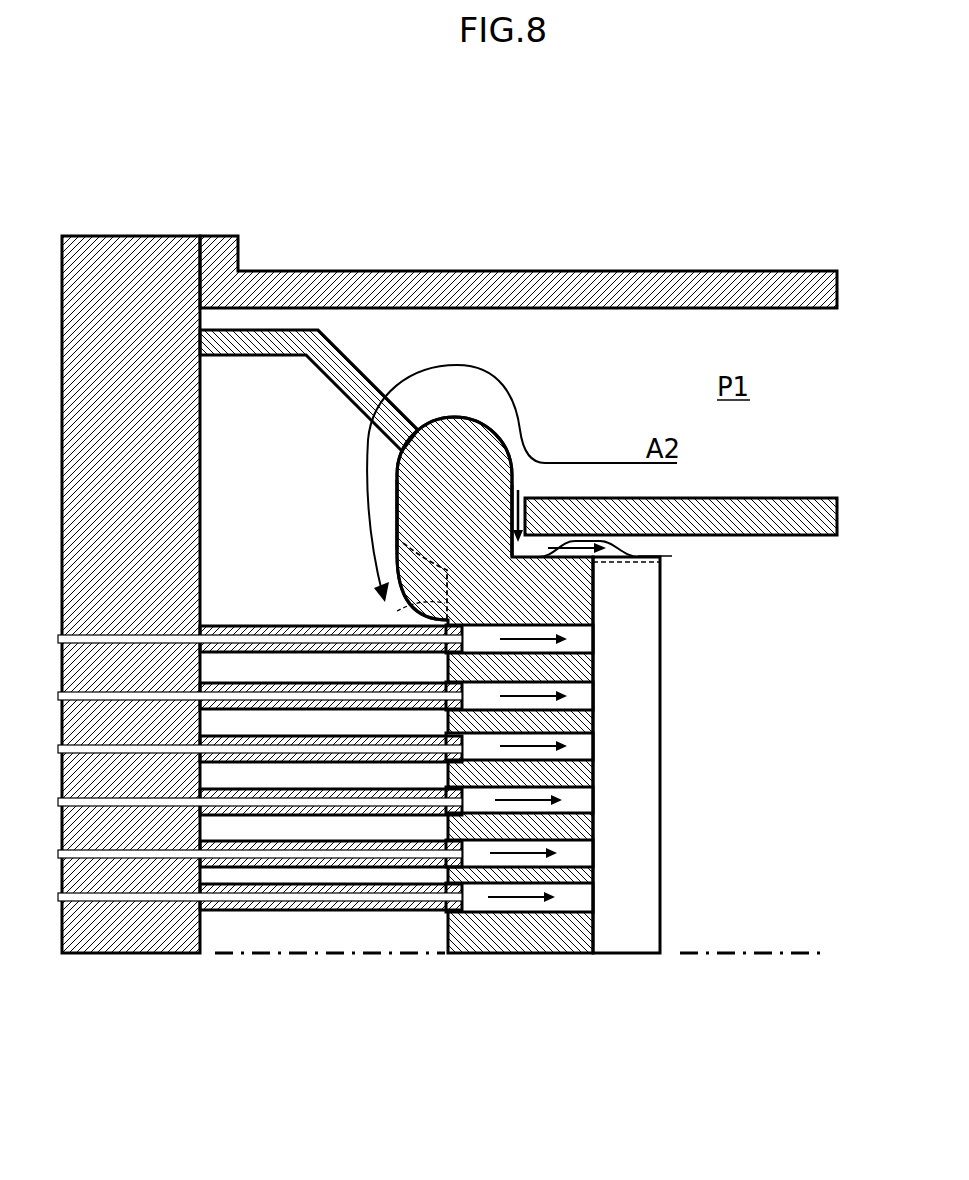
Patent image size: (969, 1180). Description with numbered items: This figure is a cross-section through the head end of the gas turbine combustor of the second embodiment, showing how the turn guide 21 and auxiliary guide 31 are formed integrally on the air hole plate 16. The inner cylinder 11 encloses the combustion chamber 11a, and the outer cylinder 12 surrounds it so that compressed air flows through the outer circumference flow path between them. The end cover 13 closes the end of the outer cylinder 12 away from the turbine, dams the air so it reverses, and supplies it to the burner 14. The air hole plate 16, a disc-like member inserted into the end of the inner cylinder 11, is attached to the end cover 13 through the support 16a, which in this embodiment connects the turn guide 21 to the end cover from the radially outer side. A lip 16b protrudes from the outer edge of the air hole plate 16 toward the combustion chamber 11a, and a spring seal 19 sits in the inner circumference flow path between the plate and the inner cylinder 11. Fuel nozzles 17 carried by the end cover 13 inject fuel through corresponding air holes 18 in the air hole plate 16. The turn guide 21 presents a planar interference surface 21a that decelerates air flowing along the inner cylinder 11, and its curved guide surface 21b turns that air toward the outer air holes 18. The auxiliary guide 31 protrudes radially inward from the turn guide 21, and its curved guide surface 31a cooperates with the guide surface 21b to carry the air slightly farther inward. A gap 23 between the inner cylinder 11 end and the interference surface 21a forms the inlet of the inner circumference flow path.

The inner cylinder 11 is at (762, 497).
The combustion chamber 11a is at (739, 710).
The outer cylinder 12 is at (580, 270).
The end cover 13 is at (131, 235).
The burner 14 is at (700, 777).
The air hole plate 16 is at (526, 955).
The support 16a is at (268, 357).
The lip 16b is at (660, 564).
The fuel nozzle 17 is at (330, 911).
The air hole 18 is at (600, 897).
The spring seal 19 is at (620, 536).
The turn guide 21 is at (458, 418).
The interference surface 21a is at (516, 482).
The guide surface 21b is at (396, 497).
The gap 23 is at (526, 498).
The auxiliary guide 31 is at (394, 562).
The guide surface 31a is at (408, 572).